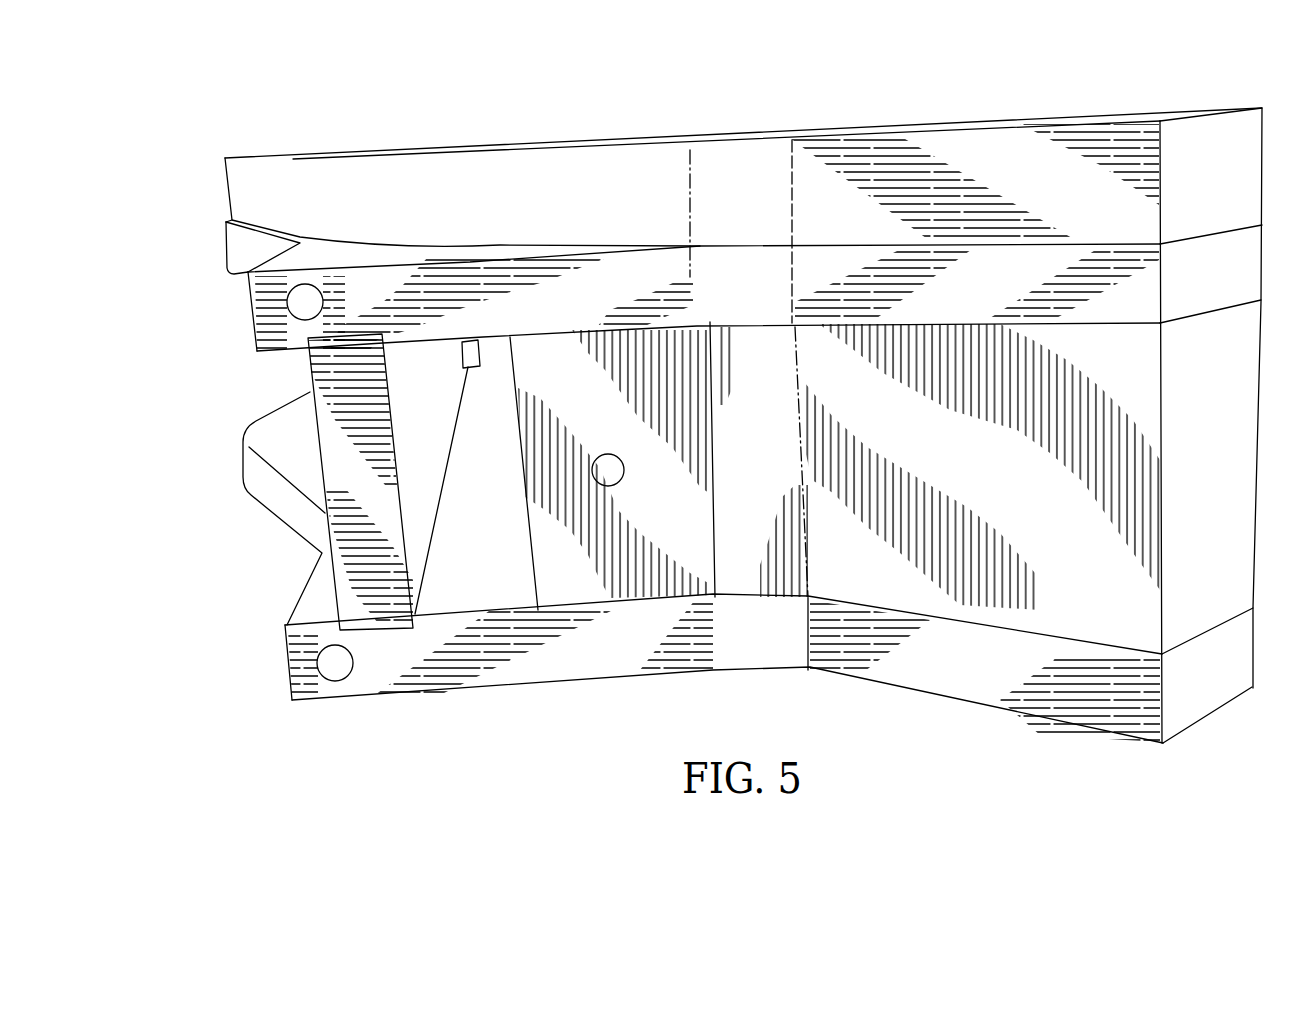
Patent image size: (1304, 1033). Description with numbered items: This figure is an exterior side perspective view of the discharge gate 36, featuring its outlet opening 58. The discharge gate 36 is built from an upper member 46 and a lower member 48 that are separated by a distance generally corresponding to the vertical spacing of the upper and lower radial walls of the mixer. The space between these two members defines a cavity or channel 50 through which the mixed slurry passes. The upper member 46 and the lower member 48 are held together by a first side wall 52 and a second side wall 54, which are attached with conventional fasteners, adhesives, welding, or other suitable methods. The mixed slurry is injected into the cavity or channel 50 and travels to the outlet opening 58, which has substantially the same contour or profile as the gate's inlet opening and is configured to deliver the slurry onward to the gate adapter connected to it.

The discharge gate 36 is at (1003, 158).
The upper member 46 is at (287, 337).
The lower member 48 is at (312, 690).
The cavity or channel 50 is at (457, 493).
The first side wall 52 is at (535, 577).
The second side wall 54 is at (405, 423).
The outlet opening 58 is at (457, 548).